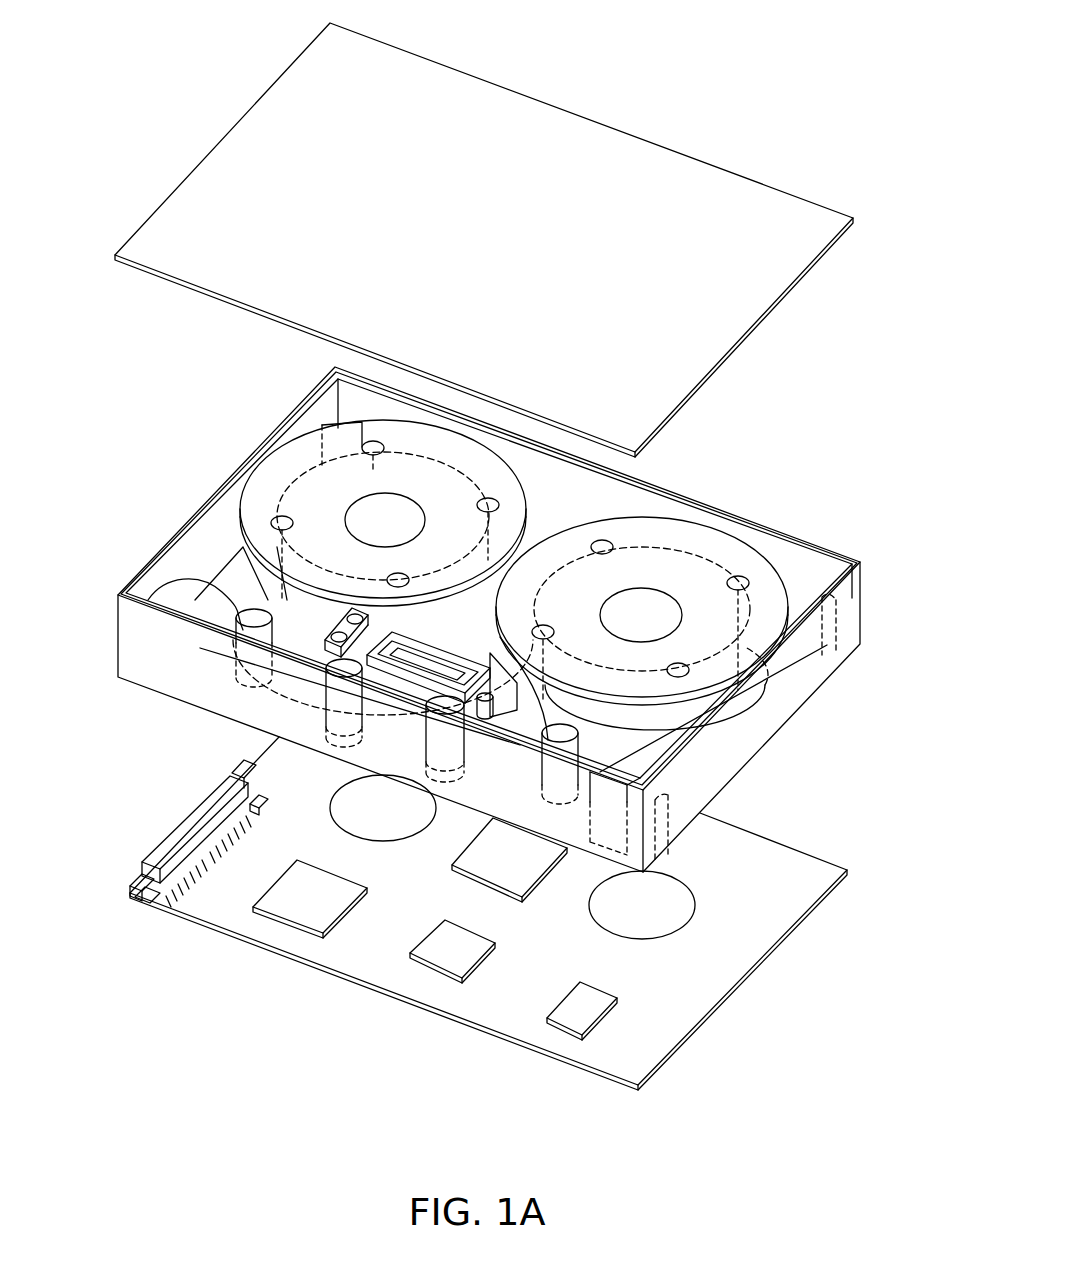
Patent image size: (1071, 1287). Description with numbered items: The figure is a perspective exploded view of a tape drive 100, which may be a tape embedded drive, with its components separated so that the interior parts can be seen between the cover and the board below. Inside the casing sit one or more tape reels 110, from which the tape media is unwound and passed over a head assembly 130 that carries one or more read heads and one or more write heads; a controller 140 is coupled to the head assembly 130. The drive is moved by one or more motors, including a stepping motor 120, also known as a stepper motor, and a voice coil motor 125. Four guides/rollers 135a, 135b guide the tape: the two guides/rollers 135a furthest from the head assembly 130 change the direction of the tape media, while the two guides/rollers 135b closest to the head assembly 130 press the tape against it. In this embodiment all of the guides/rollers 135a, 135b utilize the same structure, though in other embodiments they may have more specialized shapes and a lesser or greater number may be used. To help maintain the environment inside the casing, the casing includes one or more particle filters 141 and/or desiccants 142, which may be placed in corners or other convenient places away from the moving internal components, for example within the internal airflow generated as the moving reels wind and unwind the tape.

The tape drive 100 is at (757, 93).
The tape reels 110 is at (437, 428).
The stepping motor 120 is at (307, 633).
The voice coil motor 125 is at (418, 640).
The head assembly 130 is at (398, 655).
The guides/rollers 135a is at (245, 616).
The guides/rollers 135b is at (300, 680).
The controller 140 is at (360, 507).
The particle filters 141 is at (842, 625).
The desiccants 142 is at (660, 812).